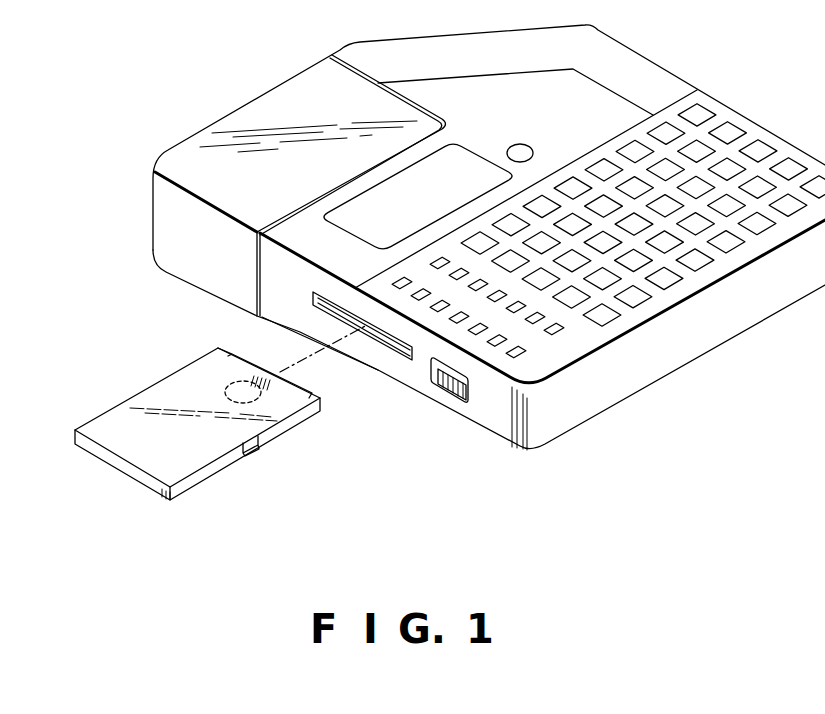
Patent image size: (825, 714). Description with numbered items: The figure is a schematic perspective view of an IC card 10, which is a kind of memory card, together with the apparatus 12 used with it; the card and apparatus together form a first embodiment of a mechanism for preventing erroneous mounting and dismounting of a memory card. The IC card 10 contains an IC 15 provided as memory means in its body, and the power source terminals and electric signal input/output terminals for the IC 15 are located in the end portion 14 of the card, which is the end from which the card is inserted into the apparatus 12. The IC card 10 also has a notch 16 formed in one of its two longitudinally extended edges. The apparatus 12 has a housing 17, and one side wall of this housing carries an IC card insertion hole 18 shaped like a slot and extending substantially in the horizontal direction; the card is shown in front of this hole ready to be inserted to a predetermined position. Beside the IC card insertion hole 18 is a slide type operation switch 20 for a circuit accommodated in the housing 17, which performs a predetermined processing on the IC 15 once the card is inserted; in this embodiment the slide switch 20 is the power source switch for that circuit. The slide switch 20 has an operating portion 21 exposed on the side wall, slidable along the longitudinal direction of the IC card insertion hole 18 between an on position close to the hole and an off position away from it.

The IC card 10 is at (218, 412).
The apparatus 12 is at (489, 254).
The end portion 14 is at (306, 387).
The IC 15 is at (228, 385).
The notch 16 is at (256, 450).
The housing 17 is at (655, 375).
The IC card insertion hole 18 is at (395, 355).
The slide type operation switch 20 is at (452, 420).
The operating portion 21 is at (442, 390).